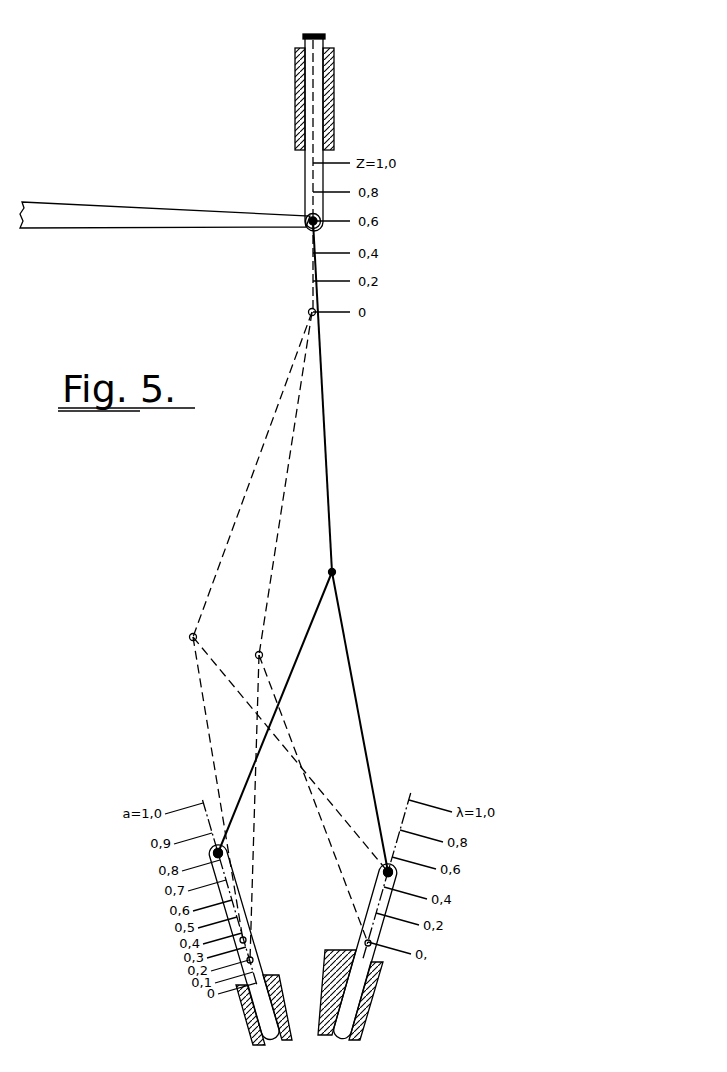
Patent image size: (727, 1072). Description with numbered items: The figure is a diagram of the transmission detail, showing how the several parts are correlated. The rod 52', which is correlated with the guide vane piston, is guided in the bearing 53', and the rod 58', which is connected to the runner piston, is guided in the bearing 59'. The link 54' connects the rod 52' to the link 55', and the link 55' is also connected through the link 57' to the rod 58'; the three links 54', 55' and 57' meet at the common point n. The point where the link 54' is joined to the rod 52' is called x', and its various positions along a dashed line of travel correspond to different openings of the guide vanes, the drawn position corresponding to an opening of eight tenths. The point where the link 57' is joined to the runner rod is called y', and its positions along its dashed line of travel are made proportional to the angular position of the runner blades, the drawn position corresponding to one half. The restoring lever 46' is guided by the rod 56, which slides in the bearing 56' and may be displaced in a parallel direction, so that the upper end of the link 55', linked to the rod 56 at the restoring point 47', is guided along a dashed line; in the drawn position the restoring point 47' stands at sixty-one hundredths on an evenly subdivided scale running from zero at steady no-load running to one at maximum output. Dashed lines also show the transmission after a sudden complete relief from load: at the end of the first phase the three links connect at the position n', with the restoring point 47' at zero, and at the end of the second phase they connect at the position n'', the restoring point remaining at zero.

The restoring lever 46' is at (165, 197).
The restoring point 47' is at (295, 238).
The rod 52' is at (260, 919).
The bearing 53' is at (242, 1010).
The link 54' is at (275, 712).
The link 55' is at (348, 396).
The rod 56 is at (341, 173).
The bearing 56' is at (340, 99).
The link 57' is at (366, 722).
The rod 58' is at (411, 916).
The bearing 59' is at (374, 995).
The connection point n is at (340, 564).
The connection point position n' is at (181, 637).
The connection point position n'' is at (245, 656).
The point x' is at (248, 855).
The point y' is at (354, 881).